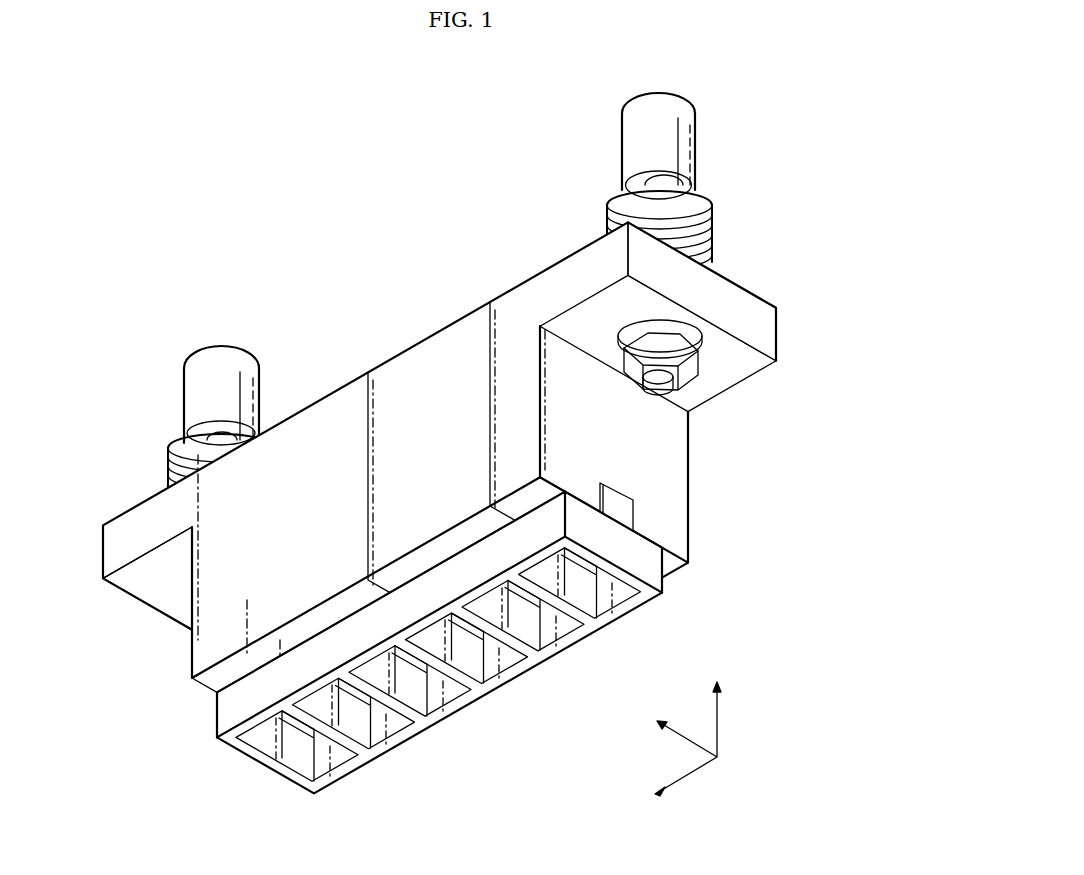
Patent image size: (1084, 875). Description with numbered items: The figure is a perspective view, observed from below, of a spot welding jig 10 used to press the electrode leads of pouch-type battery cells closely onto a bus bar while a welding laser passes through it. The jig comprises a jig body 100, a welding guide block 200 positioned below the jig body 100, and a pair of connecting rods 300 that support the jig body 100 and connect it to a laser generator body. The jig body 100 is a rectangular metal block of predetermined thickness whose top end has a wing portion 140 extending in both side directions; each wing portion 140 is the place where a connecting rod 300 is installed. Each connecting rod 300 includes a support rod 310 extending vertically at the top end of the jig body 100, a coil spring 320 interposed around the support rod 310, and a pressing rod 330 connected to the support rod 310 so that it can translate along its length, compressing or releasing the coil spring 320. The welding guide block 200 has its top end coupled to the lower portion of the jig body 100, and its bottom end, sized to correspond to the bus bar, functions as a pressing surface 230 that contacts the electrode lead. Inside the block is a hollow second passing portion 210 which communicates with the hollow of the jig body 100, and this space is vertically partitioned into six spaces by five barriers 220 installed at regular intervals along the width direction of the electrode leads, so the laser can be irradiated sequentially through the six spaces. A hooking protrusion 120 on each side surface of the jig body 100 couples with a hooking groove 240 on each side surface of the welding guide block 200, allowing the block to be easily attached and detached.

The spot welding jig 10 is at (267, 194).
The jig body 100 is at (186, 655).
The hooking protrusion 120 is at (625, 510).
The wing portion 140 is at (762, 321).
The welding guide block 200 is at (228, 758).
The second passing portion 210 is at (352, 714).
The barrier 220 is at (391, 710).
The pressing surface 230 is at (287, 781).
The hooking groove 240 is at (648, 540).
The connecting rod 300 is at (597, 108).
The support rod 310 is at (692, 178).
The coil spring 320 is at (706, 222).
The pressing rod 330 is at (688, 129).